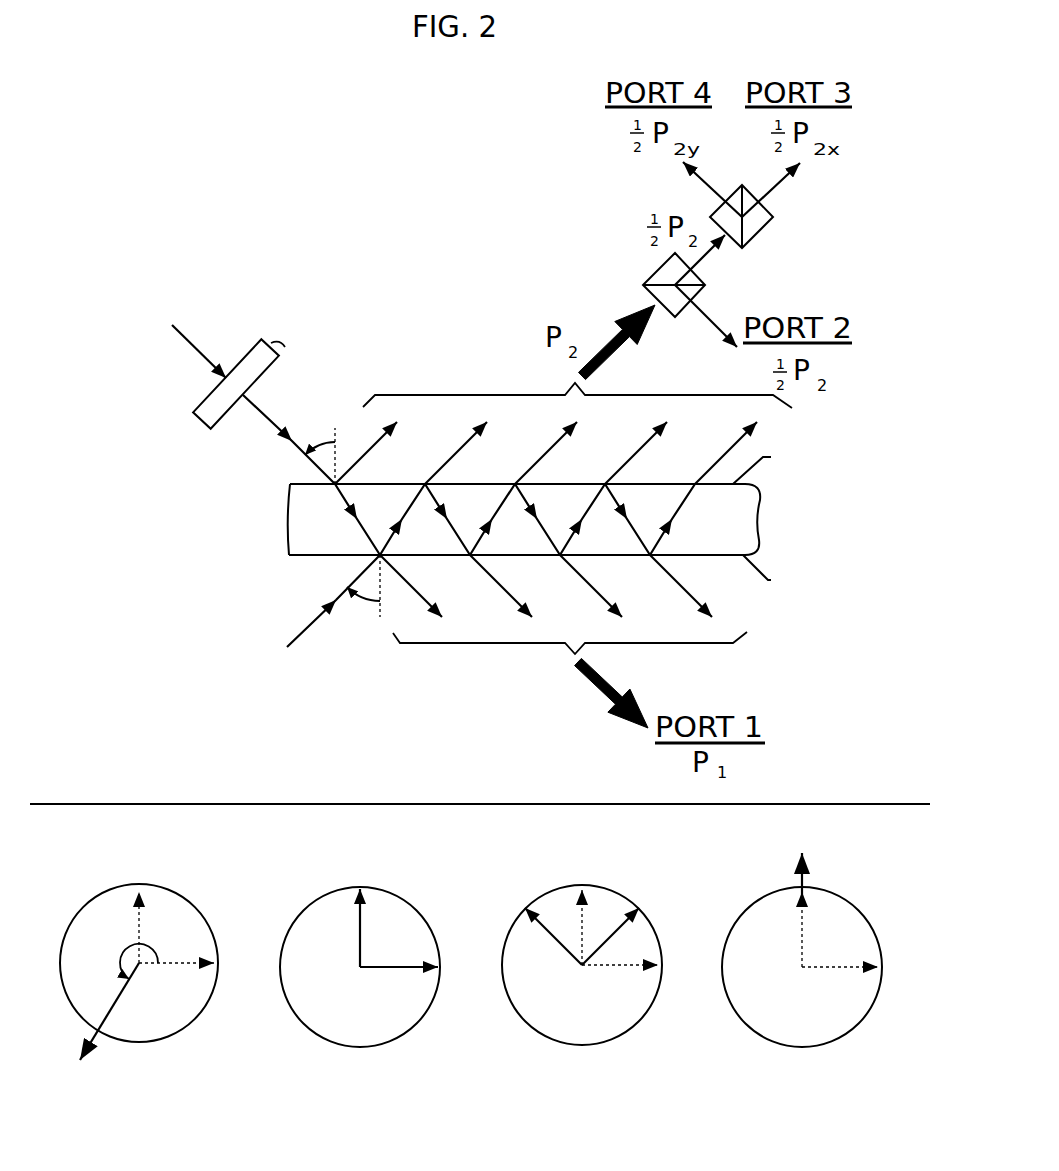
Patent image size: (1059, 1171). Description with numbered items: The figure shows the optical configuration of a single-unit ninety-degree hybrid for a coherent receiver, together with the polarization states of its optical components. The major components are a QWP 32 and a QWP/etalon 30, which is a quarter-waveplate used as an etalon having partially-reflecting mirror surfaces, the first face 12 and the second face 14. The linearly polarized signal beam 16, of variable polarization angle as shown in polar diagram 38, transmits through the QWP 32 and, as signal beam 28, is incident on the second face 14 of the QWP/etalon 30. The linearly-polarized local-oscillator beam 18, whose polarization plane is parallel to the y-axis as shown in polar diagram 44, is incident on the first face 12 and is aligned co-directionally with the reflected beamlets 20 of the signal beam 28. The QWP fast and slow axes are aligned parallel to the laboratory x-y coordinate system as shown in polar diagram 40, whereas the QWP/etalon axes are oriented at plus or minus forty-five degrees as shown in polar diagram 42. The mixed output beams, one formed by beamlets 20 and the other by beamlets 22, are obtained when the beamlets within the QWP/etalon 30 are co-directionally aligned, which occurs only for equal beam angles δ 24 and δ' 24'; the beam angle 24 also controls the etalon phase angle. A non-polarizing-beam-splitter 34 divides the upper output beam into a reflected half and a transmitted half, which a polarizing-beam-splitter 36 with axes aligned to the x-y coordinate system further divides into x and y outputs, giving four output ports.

The 1-face 12 is at (332, 558).
The 2-face 14 is at (302, 478).
The signal beam 16 is at (190, 354).
The local-oscillator beam 18 is at (302, 633).
The reflected beamlets 20 is at (475, 394).
The beamlets 22 is at (472, 656).
The beam angle δ 24 is at (363, 597).
The beam angle δ' 24' is at (317, 435).
The signal beam 28 is at (276, 430).
The QWP/etalon 30 is at (286, 523).
The QWP 32 is at (206, 428).
The non-polarizing-beam-splitter 34 is at (655, 272).
The polarizing-beam-splitter 36 is at (760, 204).
The polar diagram 38 is at (93, 902).
The polar diagram 40 is at (312, 902).
The polar diagram 42 is at (523, 1012).
The polar diagram 44 is at (743, 1018).